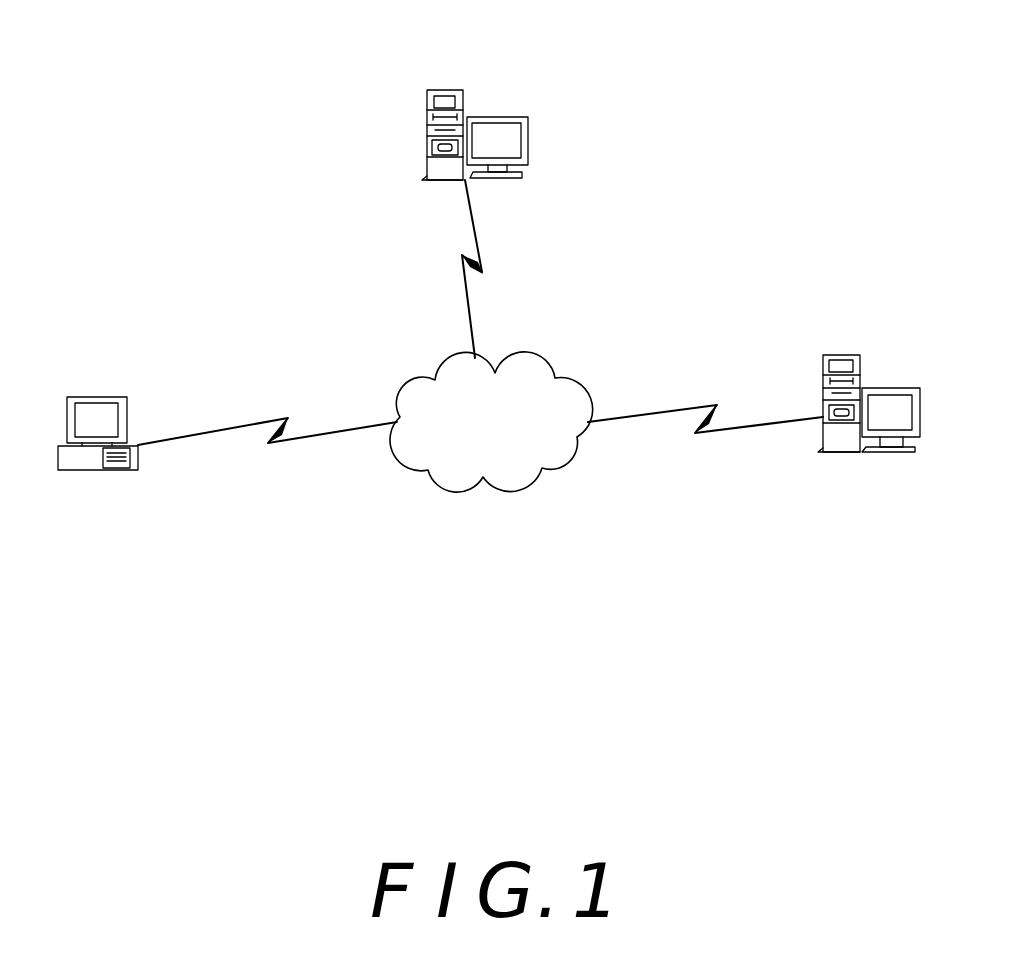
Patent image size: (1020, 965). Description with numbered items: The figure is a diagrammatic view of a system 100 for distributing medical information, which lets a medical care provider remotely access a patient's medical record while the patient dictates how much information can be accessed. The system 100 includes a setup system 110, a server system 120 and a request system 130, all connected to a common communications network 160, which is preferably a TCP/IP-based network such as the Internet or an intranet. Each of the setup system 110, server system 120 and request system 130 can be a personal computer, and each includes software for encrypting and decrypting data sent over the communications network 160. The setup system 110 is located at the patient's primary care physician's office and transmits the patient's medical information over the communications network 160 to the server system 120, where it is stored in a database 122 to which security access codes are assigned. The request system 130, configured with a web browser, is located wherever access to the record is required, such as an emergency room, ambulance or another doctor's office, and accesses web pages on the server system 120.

The system for distributing medical information 100 is at (252, 92).
The setup system 110 is at (93, 395).
The server system 120 is at (522, 117).
The database 122 is at (430, 102).
The request system 130 is at (898, 388).
The communications network 160 is at (547, 363).